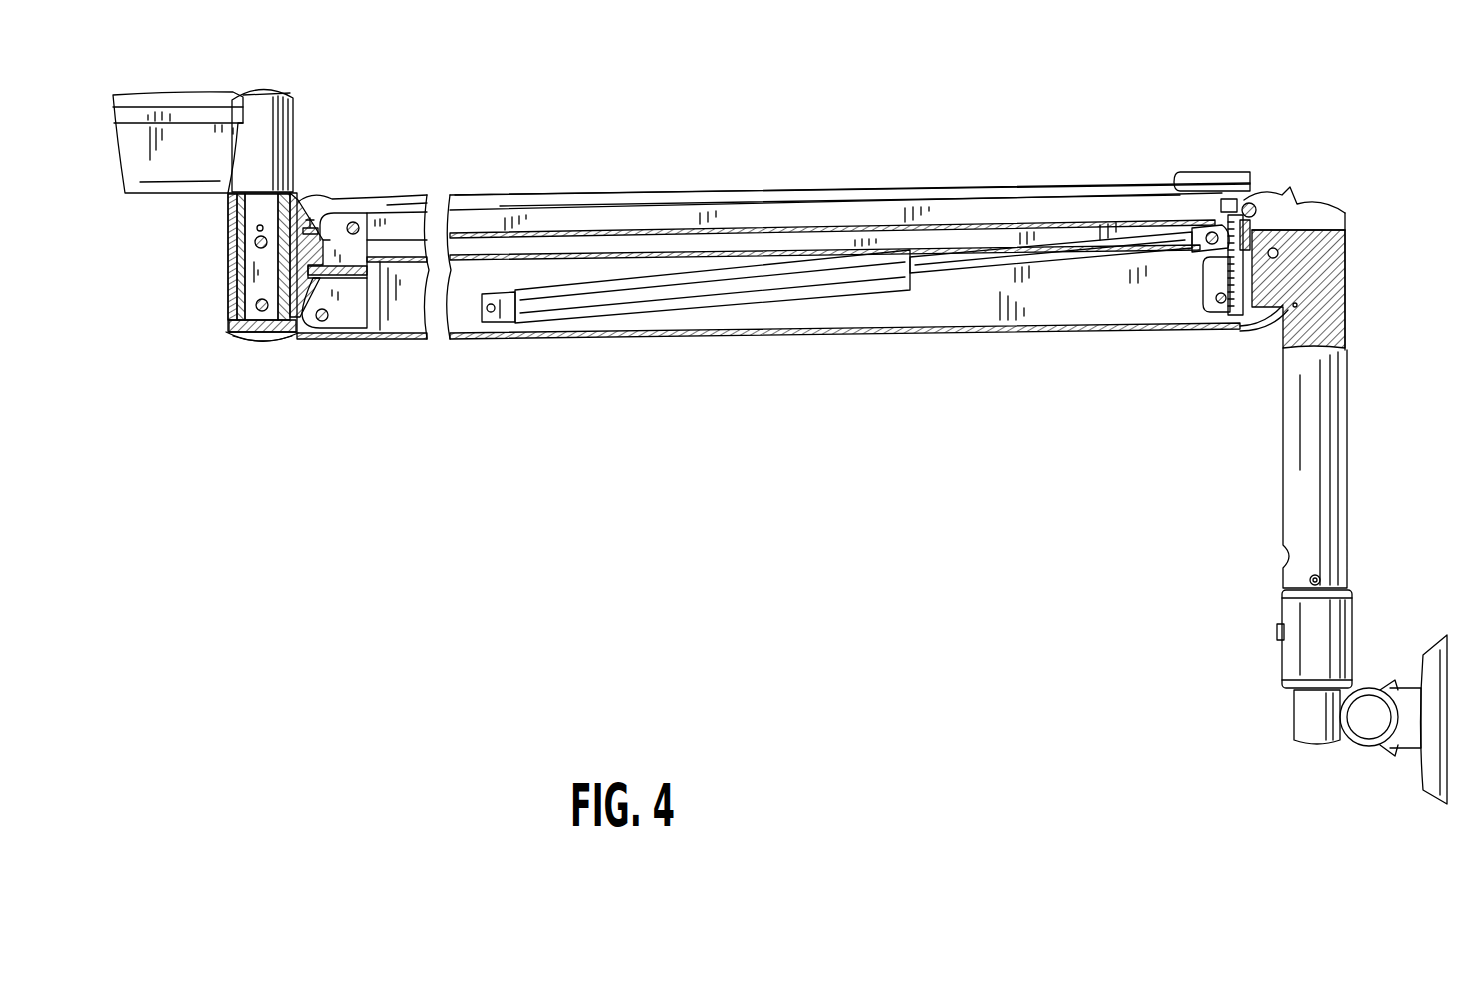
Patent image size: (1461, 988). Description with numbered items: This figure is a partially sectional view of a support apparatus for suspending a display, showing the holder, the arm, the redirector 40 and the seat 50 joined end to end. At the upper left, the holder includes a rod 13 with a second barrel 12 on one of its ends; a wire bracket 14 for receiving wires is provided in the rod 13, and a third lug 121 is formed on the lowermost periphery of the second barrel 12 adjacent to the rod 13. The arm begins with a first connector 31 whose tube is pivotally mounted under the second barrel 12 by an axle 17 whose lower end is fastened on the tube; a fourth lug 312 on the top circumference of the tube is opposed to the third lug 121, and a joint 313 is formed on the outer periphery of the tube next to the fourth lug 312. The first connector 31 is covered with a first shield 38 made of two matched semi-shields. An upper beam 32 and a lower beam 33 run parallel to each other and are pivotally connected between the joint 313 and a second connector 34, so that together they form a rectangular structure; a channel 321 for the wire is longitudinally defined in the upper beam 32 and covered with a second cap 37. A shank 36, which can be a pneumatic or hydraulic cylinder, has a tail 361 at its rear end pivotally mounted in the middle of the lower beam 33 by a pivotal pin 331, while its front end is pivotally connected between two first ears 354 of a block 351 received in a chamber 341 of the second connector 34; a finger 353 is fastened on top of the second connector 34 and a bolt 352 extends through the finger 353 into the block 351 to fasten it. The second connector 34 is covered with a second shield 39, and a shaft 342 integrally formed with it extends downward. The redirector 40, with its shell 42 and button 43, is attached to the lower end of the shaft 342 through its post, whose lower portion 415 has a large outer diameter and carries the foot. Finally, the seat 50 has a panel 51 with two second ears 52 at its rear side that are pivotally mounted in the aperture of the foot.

The second barrel 12 is at (289, 118).
The rod 13 is at (176, 178).
The wire bracket 14 is at (150, 99).
The axle 17 is at (243, 282).
The first connector 31 is at (226, 276).
The upper beam 32 is at (773, 260).
The lower beam 33 is at (847, 330).
The second connector 34 is at (1275, 251).
The shank 36 is at (816, 315).
The second cap 37 is at (677, 192).
The first shield 38 is at (262, 344).
The second shield 39 is at (1360, 420).
The redirector 40 is at (1313, 673).
The shell 42 is at (1293, 668).
The button 43 is at (1276, 632).
The seat 50 is at (1353, 757).
The panel 51 is at (1428, 680).
The second ears 52 is at (1372, 730).
The third lug 121 is at (232, 222).
The fourth lug 312 is at (298, 203).
The joint 313 is at (334, 312).
The channel 321 is at (484, 214).
The pivotal pin 331 is at (492, 318).
The chamber 341 is at (1250, 305).
The shaft 342 is at (1330, 288).
The block 351 is at (1248, 242).
The bolt 352 is at (1232, 198).
The finger 353 is at (1218, 208).
The first ears 354 is at (1208, 258).
The tail 361 is at (506, 322).
The lower portion 415 is at (1297, 725).